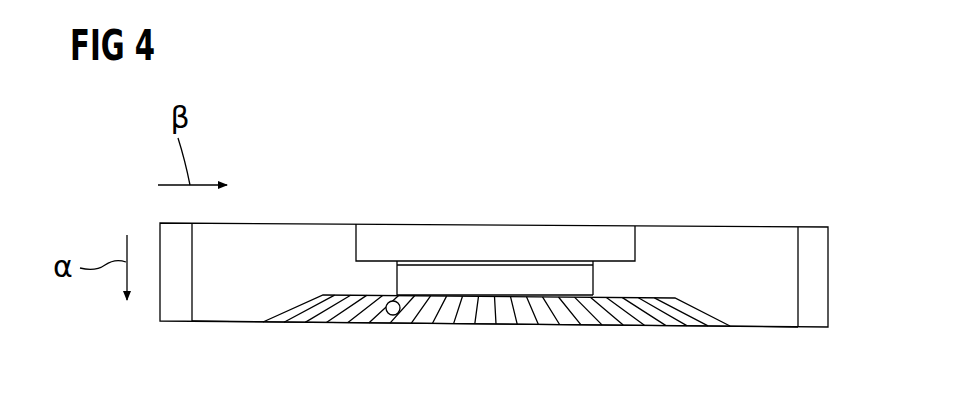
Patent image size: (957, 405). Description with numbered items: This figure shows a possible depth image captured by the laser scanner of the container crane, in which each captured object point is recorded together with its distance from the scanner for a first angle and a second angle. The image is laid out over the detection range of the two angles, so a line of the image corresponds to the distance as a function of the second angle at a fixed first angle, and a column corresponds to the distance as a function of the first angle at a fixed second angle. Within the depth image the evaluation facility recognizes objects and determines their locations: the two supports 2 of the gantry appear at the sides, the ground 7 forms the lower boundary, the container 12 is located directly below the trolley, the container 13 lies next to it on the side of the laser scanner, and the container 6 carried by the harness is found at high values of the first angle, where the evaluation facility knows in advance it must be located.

The supports 2 is at (173, 312).
The ground 7 is at (237, 312).
The container 6 is at (481, 310).
The container 12 is at (528, 277).
The container 13 is at (475, 242).